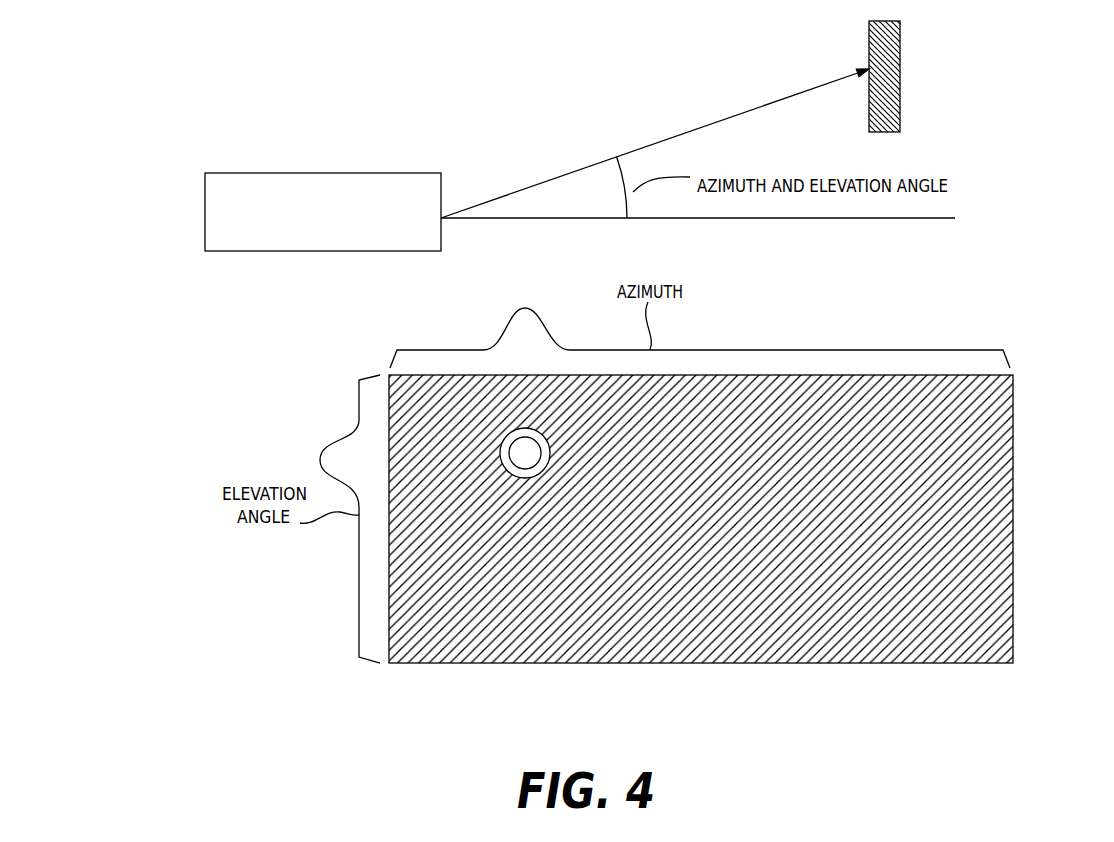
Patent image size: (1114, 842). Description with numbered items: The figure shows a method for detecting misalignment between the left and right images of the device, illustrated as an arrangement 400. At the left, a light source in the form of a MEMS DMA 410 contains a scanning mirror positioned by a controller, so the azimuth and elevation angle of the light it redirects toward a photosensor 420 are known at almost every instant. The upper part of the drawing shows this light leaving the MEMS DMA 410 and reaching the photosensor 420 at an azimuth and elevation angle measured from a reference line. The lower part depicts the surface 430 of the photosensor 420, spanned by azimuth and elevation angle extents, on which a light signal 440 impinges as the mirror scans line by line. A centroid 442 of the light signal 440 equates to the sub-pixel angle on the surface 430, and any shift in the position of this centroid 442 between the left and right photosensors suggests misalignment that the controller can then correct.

The scanning field diagram 400 is at (602, 720).
The MEMS DMA 410 is at (205, 209).
The photosensor 420 is at (900, 85).
The surface 430 is at (1013, 533).
The light signal 440 is at (553, 460).
The centroid 442 is at (525, 469).